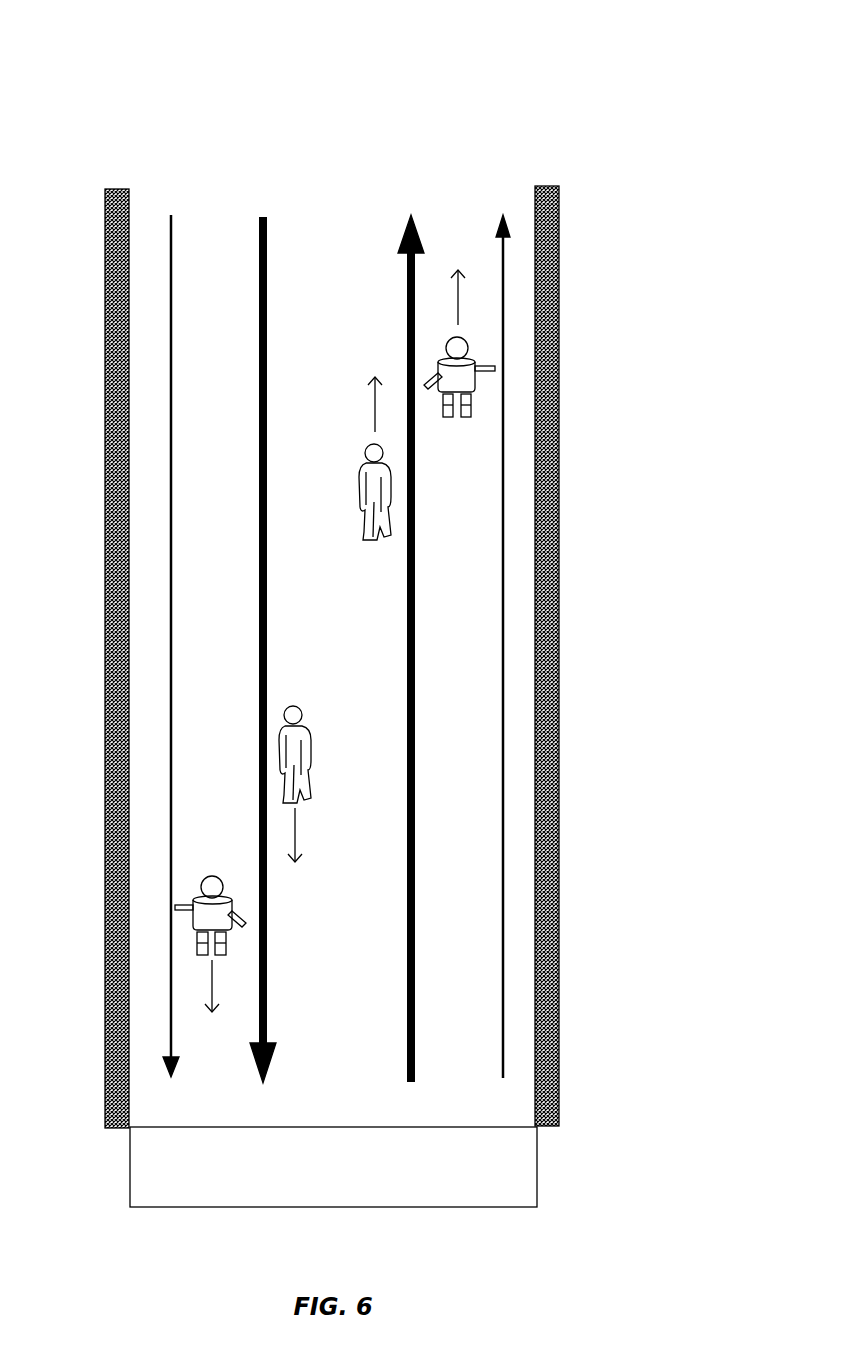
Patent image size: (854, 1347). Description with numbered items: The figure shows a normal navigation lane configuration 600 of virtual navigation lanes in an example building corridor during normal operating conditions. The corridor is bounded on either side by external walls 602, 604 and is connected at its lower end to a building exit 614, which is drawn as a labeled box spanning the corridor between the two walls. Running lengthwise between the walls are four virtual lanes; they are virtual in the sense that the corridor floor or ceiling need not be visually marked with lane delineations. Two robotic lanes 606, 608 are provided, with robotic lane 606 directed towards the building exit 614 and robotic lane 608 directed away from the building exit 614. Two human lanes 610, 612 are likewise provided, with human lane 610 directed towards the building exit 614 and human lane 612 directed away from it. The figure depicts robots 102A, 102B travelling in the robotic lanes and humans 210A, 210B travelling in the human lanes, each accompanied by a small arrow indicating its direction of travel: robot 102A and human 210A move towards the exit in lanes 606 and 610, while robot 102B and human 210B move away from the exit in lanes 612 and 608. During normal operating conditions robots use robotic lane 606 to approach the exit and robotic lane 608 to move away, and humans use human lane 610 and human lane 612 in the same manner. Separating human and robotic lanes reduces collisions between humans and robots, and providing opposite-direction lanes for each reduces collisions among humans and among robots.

The normal navigation lane configuration 600 is at (673, 31).
The external wall 602 is at (112, 188).
The external wall 604 is at (544, 186).
The robotic lane 606 is at (170, 205).
The robotic lane 608 is at (498, 203).
The human lane 610 is at (263, 203).
The human lane 612 is at (407, 203).
The building exit 614 is at (537, 1163).
The robot 102A is at (208, 876).
The robot 102B is at (455, 422).
The person 210A is at (289, 705).
The person 210B is at (370, 543).